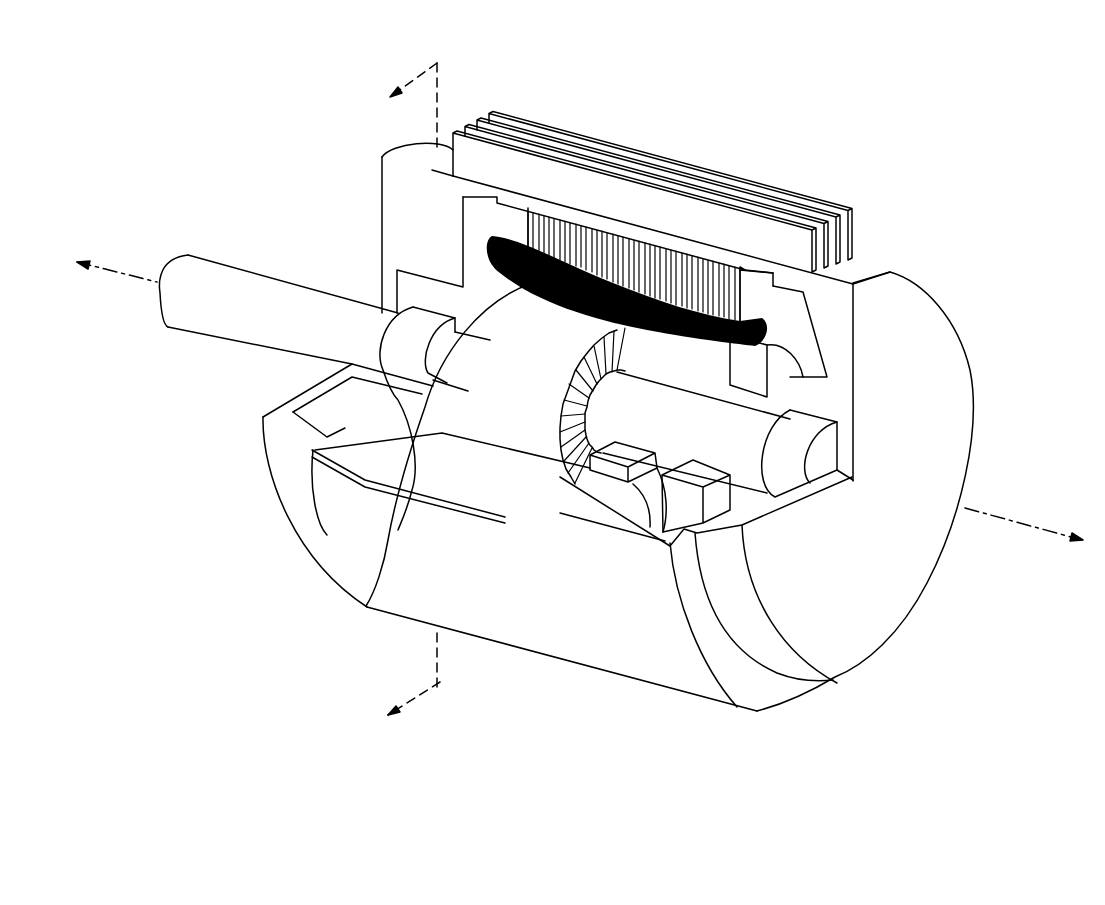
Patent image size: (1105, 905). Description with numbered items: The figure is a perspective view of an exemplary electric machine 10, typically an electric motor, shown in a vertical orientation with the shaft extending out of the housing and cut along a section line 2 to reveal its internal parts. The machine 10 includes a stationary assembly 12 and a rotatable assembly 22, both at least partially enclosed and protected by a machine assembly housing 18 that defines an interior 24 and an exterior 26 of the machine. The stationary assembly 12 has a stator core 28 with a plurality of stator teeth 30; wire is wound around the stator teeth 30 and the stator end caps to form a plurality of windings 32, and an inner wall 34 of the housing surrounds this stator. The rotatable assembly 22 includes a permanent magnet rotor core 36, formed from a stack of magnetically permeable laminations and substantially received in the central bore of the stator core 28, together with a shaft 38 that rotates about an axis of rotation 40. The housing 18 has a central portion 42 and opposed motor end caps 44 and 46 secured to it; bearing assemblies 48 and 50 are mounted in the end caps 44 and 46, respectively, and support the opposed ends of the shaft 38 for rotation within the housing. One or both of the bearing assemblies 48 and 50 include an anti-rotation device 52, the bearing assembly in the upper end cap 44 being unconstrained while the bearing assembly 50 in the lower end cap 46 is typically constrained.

The section line 2 is at (423, 373).
The electric machine 10 is at (948, 176).
The stationary assembly 12 is at (590, 266).
The machine assembly housing 18 is at (806, 187).
The rotatable assembly 22 is at (497, 421).
The interior 24 is at (432, 247).
The exterior 26 is at (411, 139).
The stator core 28 is at (636, 268).
The stator teeth 30 is at (760, 273).
The windings 32 is at (657, 318).
The housing front end 34 is at (387, 535).
The permanent magnet rotor core 36 is at (593, 530).
The shaft 38 is at (193, 333).
The axis of rotation 40 is at (118, 268).
The central portion 42 is at (598, 691).
The motor end cap 44 is at (382, 157).
The motor end cap 46 is at (902, 630).
The bearing assembly 48 is at (316, 280).
The bearing assembly 50 is at (777, 387).
The anti-rotation device 52 is at (403, 455).